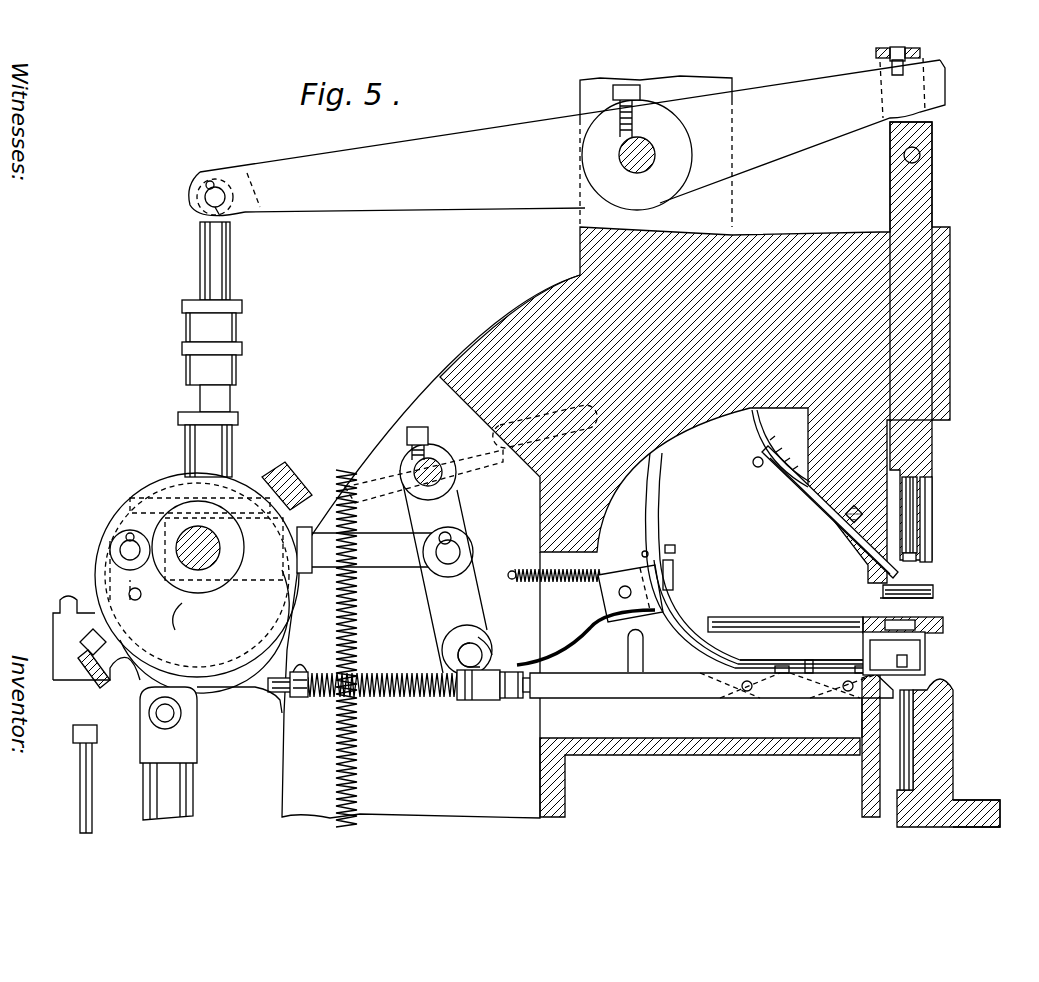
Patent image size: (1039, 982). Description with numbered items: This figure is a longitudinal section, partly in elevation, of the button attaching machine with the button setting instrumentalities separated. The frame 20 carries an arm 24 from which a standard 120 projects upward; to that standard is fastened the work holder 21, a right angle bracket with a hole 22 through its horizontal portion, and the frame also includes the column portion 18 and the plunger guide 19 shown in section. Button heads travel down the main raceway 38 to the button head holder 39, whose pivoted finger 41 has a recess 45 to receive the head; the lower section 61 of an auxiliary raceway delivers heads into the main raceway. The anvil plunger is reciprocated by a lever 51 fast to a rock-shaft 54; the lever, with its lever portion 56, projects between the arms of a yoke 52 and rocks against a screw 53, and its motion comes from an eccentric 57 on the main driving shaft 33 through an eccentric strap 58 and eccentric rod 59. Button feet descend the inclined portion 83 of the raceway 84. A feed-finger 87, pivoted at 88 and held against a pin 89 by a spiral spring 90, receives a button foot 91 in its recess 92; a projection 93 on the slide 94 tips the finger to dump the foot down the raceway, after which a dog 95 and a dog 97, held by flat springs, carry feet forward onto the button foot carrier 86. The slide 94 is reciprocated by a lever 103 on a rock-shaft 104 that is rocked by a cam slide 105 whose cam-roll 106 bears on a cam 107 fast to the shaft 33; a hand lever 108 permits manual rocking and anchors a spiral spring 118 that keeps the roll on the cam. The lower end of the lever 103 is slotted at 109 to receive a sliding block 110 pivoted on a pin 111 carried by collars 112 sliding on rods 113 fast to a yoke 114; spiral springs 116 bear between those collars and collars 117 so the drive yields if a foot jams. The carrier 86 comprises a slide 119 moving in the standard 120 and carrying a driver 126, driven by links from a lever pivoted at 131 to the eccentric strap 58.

The standard column 18 is at (915, 187).
The needle bar 19 is at (917, 524).
The frame 20 is at (545, 330).
The holder for the work or fabric 21 is at (943, 625).
The hole 22 is at (905, 618).
The arm 24 is at (755, 758).
The main driving shaft 33 is at (205, 568).
The main raceway 38 is at (858, 556).
The button head holder 39 is at (947, 532).
The finger 41 is at (885, 594).
The recesses 45 is at (935, 596).
The lever 51 is at (798, 140).
The yoke 52 is at (876, 54).
The screw 53 is at (905, 68).
The rock-shaft 54 is at (620, 155).
The lever 56 is at (712, 190).
The eccentric 57 is at (118, 582).
The eccentric strap 58 is at (165, 497).
The eccentric rod 59 is at (230, 262).
The lower section 61 is at (752, 440).
The downwardly extended portion of raceway 83 is at (660, 478).
The raceway 84 is at (790, 648).
The button foot carrier 86 is at (909, 653).
The feed-finger 87 is at (620, 634).
The pivot 88 is at (620, 596).
The pin 89 is at (643, 552).
The spiral spring 90 is at (525, 585).
The button foot 91 is at (674, 572).
The recess 92 is at (676, 549).
The projection 93 is at (643, 652).
The slide 94 is at (638, 700).
The dog 95 is at (858, 666).
The dog 97 is at (785, 668).
The lever 103 is at (440, 620).
The rock-shaft 104 is at (440, 484).
The cam slide 105 is at (405, 562).
The cam-roll 106 is at (115, 548).
The cam 107 is at (180, 632).
The hand lever 108 is at (383, 477).
The slot 109 is at (484, 640).
The sliding block 110 is at (445, 652).
The pin 111 is at (458, 705).
The collars 112 is at (490, 700).
The rods 113 is at (280, 695).
The yoke 114 is at (524, 698).
The spiral springs 116 is at (400, 700).
The collars 117 is at (300, 698).
The spiral spring 118 is at (336, 782).
The slide 119 is at (960, 770).
The standard 120 is at (950, 730).
The driver 126 is at (915, 700).
The pivot 131 is at (167, 714).